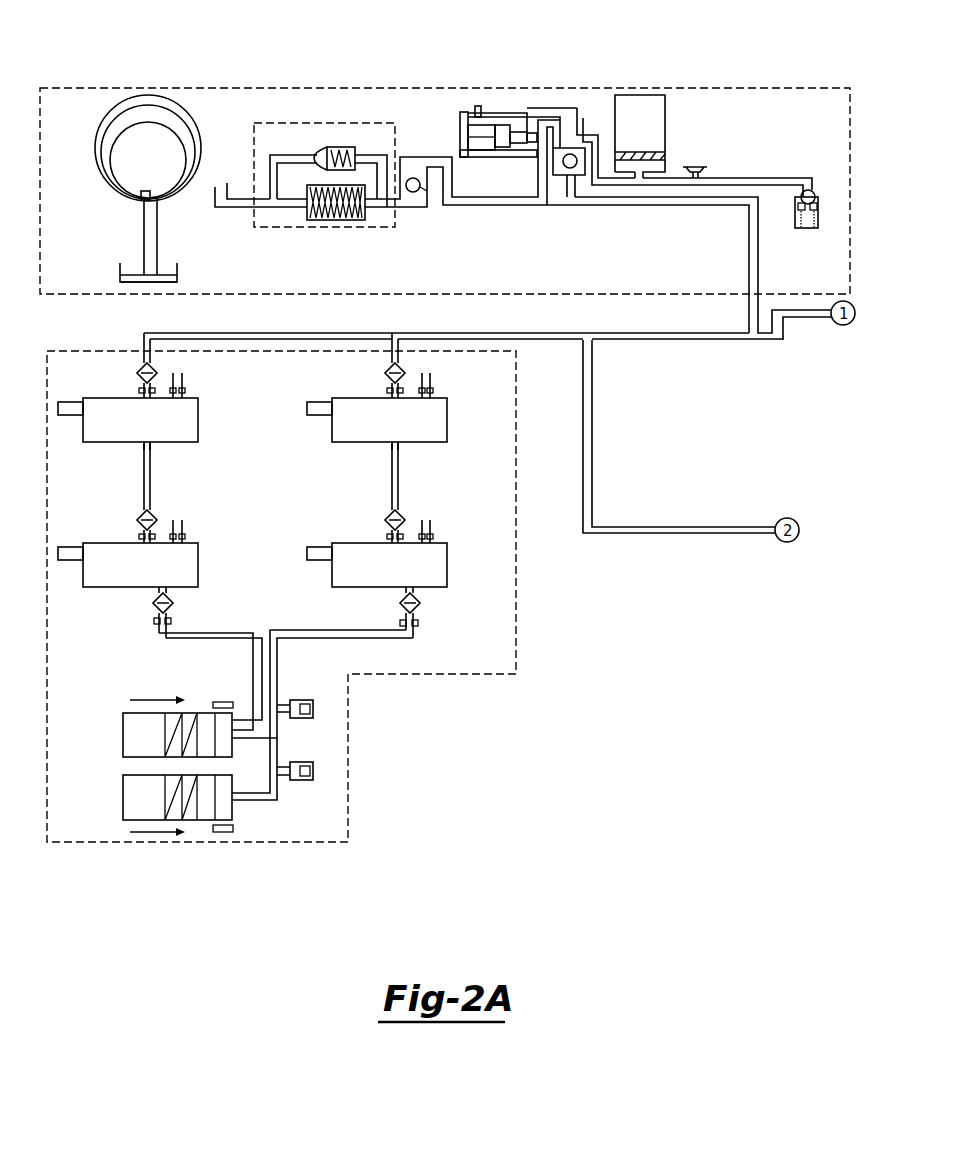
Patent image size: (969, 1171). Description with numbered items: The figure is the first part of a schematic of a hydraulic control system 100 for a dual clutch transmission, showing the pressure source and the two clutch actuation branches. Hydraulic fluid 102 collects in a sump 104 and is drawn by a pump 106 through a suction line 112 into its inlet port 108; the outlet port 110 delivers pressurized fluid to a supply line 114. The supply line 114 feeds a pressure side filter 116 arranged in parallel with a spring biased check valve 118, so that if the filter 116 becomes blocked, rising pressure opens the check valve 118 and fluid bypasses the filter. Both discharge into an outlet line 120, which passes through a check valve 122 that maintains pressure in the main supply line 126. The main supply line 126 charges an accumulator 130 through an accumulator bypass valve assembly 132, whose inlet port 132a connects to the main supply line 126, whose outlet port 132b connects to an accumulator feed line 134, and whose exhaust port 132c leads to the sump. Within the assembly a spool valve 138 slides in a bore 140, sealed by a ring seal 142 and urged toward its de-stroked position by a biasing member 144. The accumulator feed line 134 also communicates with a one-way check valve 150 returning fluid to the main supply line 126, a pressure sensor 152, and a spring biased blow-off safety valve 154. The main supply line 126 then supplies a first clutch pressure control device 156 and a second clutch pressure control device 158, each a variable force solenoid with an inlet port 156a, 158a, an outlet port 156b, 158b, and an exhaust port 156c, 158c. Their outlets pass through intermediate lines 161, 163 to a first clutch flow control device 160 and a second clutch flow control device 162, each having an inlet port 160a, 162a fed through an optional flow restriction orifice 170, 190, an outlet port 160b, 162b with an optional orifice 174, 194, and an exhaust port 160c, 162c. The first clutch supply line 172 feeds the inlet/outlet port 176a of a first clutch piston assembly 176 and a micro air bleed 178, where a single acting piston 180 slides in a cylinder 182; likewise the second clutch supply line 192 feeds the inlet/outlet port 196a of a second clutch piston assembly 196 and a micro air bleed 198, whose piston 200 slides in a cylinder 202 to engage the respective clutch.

The hydraulic control system 100 is at (770, 72).
The hydraulic fluid 102 is at (128, 275).
The sump 104 is at (180, 276).
The pump 106 is at (125, 150).
The inlet port 108 is at (143, 197).
The outlet port 110 is at (227, 183).
The suction line 112 is at (157, 235).
The supply line 114 is at (233, 208).
The pressure side filter 116 is at (335, 221).
The spring biased check valve 118 is at (340, 147).
The outlet line 120 is at (388, 208).
The check valve 122 is at (420, 190).
The main supply line 126 is at (648, 198).
The accumulator 130 is at (665, 120).
The accumulator bypass valve assembly 132 is at (471, 141).
The inlet port 132a is at (543, 158).
The outlet port 132b is at (525, 118).
The exhaust port 132c is at (463, 112).
The accumulator feed line 134 is at (577, 113).
The spool valve 138 is at (500, 157).
The bore 140 is at (478, 106).
The ring seal 142 is at (514, 142).
The biasing member 144 is at (480, 140).
The one-way check valve 150 is at (556, 150).
The pressure sensor 152 is at (695, 165).
The spring biased blow-off safety valve 154 is at (818, 218).
The first clutch pressure control device 156 is at (151, 401).
The inlet port 156a is at (142, 392).
The outlet port 156b is at (144, 446).
The exhaust port 156c is at (188, 393).
The second clutch pressure control device 158 is at (388, 401).
The inlet port 158a is at (390, 392).
The outlet port 158b is at (398, 446).
The exhaust port 158c is at (436, 393).
The first clutch flow control device 160 is at (158, 566).
The inlet port 160a is at (142, 538).
The outlet port 160b is at (155, 597).
The exhaust port 160c is at (192, 540).
The intermediate line 161 is at (150, 470).
The second clutch flow control device 162 is at (393, 564).
The inlet port 162a is at (390, 538).
The outlet port 162b is at (418, 597).
The exhaust port 162c is at (440, 540).
The intermediate line 163 is at (392, 470).
The flow restriction orifice 170 is at (160, 535).
The first clutch supply line 172 is at (255, 633).
The flow restriction orifice 174 is at (154, 622).
The first clutch piston assembly 176 is at (200, 712).
The inlet/outlet port 176a is at (240, 737).
The micro air bleed 178 is at (313, 716).
The single acting piston 180 is at (205, 722).
The cylinder 182 is at (233, 720).
The flow restriction orifice 190 is at (410, 535).
The second clutch supply line 192 is at (325, 631).
The flow restriction orifice 194 is at (418, 623).
The second clutch piston assembly 196 is at (200, 829).
The inlet/outlet port 196a is at (237, 802).
The micro air bleed 198 is at (313, 776).
The single acting piston 200 is at (207, 815).
The cylinder 202 is at (237, 812).